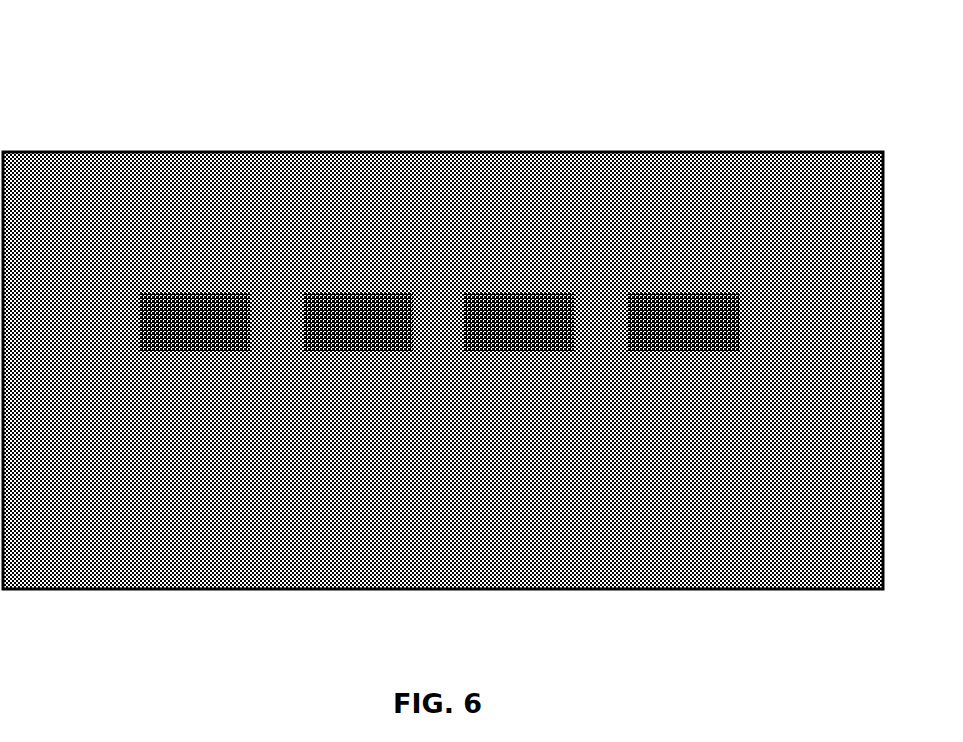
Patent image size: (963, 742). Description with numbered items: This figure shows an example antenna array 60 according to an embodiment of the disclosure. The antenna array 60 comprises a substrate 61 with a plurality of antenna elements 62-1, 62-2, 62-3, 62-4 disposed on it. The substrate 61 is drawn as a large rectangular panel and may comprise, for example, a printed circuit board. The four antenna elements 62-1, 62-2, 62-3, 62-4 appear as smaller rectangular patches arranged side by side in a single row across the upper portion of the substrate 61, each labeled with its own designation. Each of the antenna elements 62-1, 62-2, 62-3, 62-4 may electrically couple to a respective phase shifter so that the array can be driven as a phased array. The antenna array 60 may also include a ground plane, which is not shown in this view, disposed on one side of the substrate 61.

The antenna array 60 is at (100, 76).
The substrate 61 is at (80, 152).
The antenna element 62-1 is at (168, 292).
The antenna element 62-2 is at (330, 292).
The antenna element 62-3 is at (500, 292).
The antenna element 62-4 is at (664, 292).